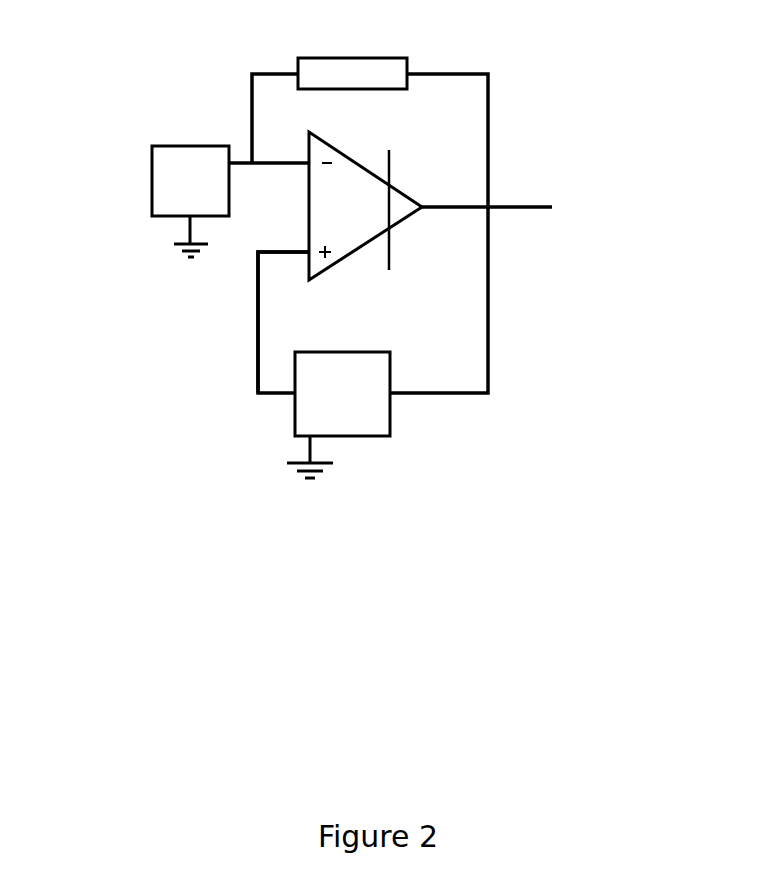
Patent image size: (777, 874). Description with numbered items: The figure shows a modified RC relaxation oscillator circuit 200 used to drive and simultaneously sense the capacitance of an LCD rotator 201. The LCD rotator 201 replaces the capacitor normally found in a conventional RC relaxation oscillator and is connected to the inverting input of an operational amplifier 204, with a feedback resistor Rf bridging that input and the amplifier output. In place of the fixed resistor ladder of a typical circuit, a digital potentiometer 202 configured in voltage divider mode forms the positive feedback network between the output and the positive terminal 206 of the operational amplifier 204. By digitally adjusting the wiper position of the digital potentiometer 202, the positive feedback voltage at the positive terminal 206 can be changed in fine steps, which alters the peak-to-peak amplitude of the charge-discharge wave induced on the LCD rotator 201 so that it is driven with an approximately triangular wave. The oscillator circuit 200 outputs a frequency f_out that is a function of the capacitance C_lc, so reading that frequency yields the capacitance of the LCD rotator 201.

The modified RC relaxation oscillator circuit 200 is at (563, 110).
The LCD rotator 201 is at (147, 155).
The digital potentiometer (Digipot) 202 is at (337, 383).
The operational amplifier 204 is at (348, 152).
The positive terminal 206 is at (264, 262).